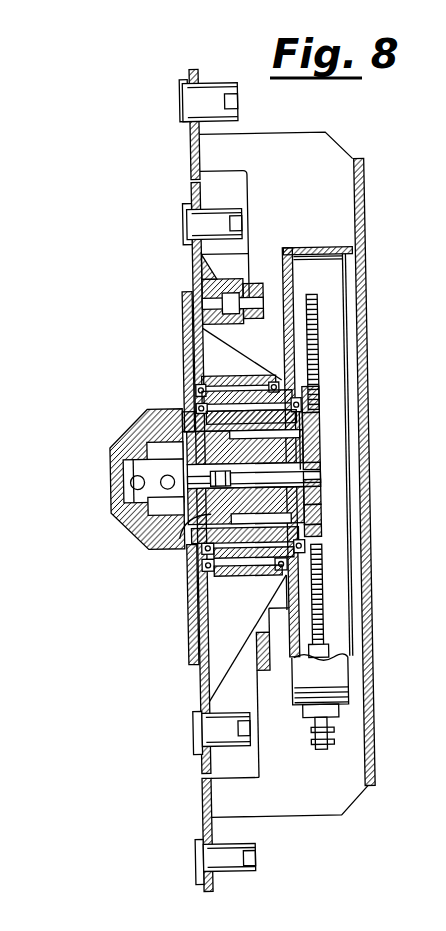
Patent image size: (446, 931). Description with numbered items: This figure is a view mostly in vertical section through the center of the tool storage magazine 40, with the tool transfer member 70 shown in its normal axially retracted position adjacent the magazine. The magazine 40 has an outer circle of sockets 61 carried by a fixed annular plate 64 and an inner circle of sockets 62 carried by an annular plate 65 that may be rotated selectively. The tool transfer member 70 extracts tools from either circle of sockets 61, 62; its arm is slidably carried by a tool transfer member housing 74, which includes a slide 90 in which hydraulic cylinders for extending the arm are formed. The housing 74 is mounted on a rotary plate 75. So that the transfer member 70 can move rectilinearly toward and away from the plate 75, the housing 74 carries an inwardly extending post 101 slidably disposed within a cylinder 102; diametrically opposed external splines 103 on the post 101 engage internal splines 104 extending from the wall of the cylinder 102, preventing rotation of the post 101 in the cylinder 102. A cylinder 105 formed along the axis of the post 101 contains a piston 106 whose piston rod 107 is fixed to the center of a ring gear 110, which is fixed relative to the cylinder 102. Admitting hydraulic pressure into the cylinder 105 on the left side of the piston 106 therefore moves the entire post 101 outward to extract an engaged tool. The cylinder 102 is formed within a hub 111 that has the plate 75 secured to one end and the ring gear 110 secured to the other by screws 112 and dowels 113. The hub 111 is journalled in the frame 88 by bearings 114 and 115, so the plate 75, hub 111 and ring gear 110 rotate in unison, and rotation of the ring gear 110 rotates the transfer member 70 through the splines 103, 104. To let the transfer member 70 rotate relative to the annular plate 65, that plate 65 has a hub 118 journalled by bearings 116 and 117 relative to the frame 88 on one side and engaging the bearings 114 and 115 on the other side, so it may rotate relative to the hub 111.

The tool storage magazine 40 is at (356, 147).
The sockets 61 is at (211, 93).
The sockets 62 is at (216, 220).
The annular plate 64 is at (196, 128).
The annular plate 65 is at (195, 186).
The tool transfer member 70 is at (238, 463).
The tool transfer member housing 74 is at (241, 474).
The rotary plate 75 is at (186, 318).
The frame 88 is at (331, 795).
The slide 90 is at (112, 470).
The post 101 is at (322, 433).
The cylinder 102 is at (322, 498).
The external splines 103 is at (325, 517).
The internal splines 104 is at (173, 533).
The cylinder 105 is at (300, 448).
The piston 106 is at (200, 435).
The piston rod 107 is at (320, 470).
The ring gear 110 is at (321, 297).
The hub 111 is at (247, 417).
The screws 112 is at (322, 533).
The dowels 113 is at (300, 410).
The bearing 114 is at (197, 395).
The bearing 115 is at (317, 387).
The bearing 116 is at (200, 387).
The bearing 117 is at (293, 380).
The hub 118 is at (226, 397).